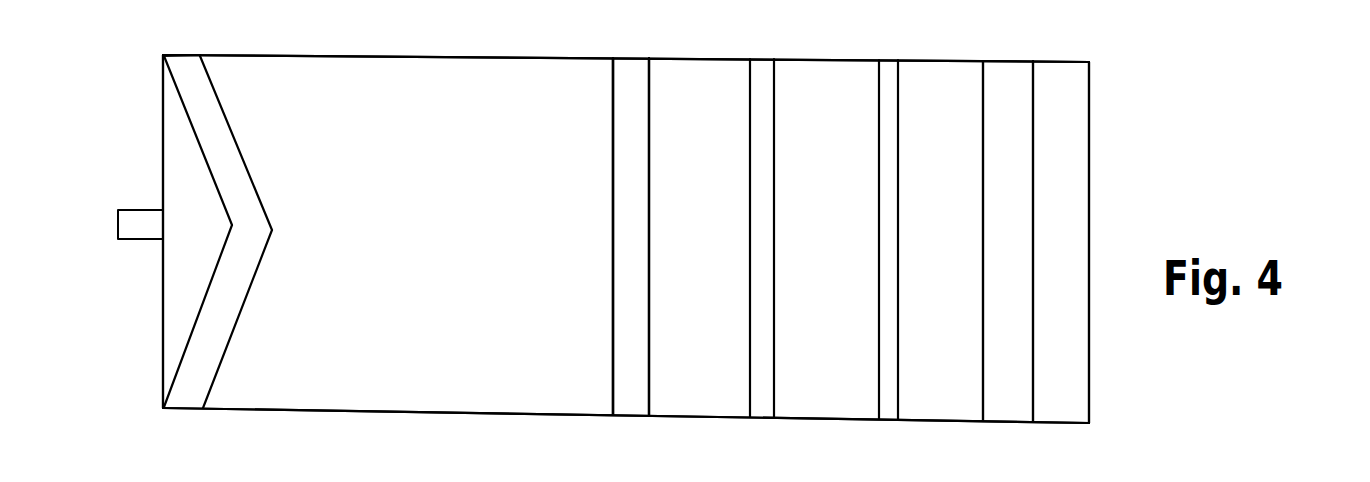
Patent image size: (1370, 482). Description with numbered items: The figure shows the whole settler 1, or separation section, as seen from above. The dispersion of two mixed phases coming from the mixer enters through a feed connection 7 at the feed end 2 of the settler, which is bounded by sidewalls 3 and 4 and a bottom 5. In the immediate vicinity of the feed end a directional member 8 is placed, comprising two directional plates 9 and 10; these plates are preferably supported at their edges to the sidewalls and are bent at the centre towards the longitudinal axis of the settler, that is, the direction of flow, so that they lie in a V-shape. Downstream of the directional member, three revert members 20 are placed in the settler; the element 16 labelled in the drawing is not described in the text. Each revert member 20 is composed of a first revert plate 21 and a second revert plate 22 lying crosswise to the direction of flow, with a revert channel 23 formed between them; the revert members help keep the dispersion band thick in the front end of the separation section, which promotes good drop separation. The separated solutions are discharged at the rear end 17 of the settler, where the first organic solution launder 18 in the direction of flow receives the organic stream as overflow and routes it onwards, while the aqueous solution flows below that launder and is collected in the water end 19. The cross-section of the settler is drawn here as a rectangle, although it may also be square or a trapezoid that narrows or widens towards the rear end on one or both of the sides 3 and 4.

The settler 1 is at (117, 152).
The feed end 2 is at (156, 178).
The sidewall 3 is at (318, 55).
The sidewall 4 is at (322, 410).
The bottom 5 is at (432, 7).
The feed connection 7 is at (127, 223).
The directional member 8 is at (171, 42).
The directional plate 9 is at (180, 87).
The directional plate 10 is at (228, 108).
The strip region 16 is at (570, 207).
The rear end 17 is at (1095, 178).
The organic solution launder 18 is at (1003, 80).
The water end 19 is at (1072, 100).
The revert member 20 is at (638, 35).
The first revert plate 21 is at (612, 150).
The second revert plate 22 is at (651, 162).
The revert channel 23 is at (625, 392).